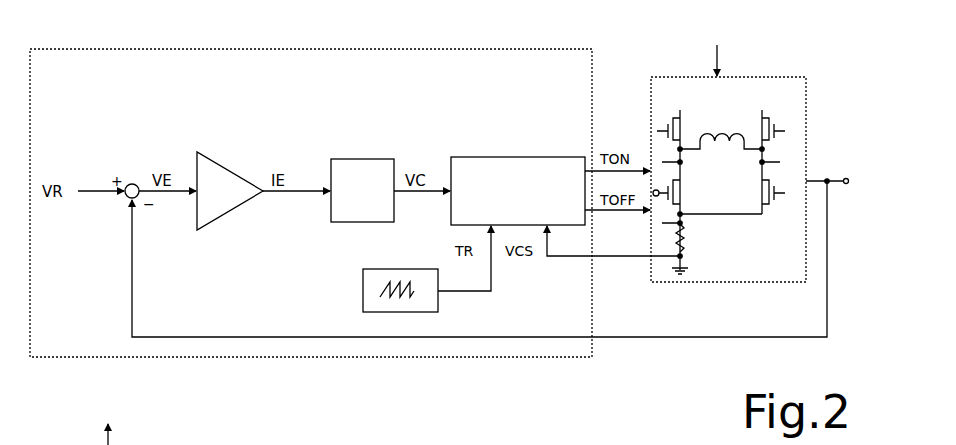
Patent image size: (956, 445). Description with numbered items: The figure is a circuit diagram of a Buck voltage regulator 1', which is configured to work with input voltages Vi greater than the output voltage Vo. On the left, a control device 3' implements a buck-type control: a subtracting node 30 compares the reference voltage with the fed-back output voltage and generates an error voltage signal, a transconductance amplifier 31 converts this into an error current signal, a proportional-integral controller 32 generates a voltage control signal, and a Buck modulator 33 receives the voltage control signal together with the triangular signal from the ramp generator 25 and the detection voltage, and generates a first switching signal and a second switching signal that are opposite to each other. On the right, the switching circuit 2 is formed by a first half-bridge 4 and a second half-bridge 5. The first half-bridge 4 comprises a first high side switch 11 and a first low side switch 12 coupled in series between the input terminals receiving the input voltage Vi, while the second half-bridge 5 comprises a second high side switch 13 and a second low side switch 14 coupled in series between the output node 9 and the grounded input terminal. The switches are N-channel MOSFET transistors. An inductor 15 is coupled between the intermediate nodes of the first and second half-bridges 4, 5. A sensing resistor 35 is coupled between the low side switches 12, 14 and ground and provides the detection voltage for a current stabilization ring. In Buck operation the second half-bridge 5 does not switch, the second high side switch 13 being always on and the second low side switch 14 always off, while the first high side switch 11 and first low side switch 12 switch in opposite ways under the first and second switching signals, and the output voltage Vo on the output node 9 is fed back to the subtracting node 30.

The control device 3' is at (311, 183).
The subtracting node 30 is at (132, 183).
The transconductance amplifier 31 is at (205, 152).
The proportional-integral controller 32 is at (338, 159).
The Buck modulator 33 is at (466, 157).
The ramp generator 25 is at (360, 291).
The voltage regulator 1' is at (762, 143).
The switching circuit 2 is at (808, 133).
The first half-bridge 4 is at (686, 147).
The second half-bridge 5 is at (776, 132).
The first high side switch 11 is at (677, 118).
The first low side switch 12 is at (686, 191).
The second high side switch 13 is at (769, 118).
The second low side switch 14 is at (769, 210).
The inductor 15 is at (714, 131).
The sensing resistor 35 is at (685, 241).
The output node 9 is at (846, 176).